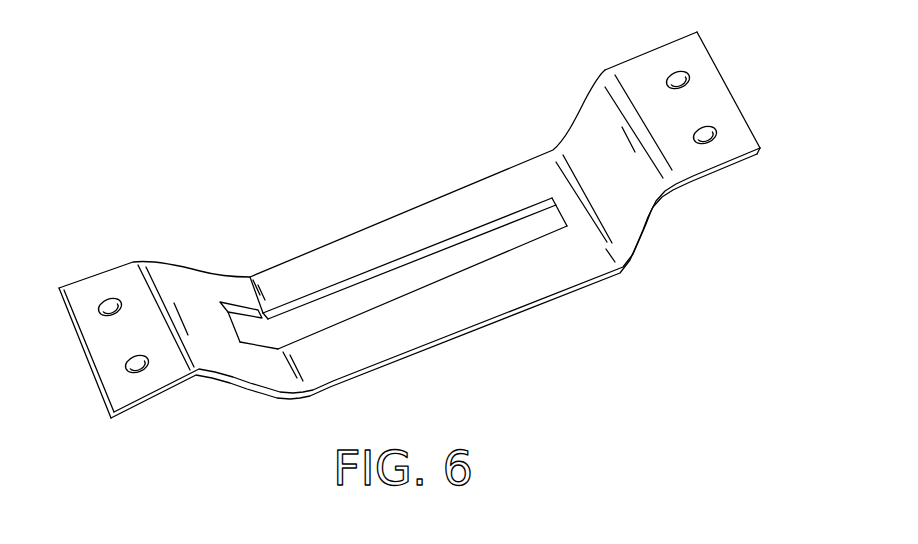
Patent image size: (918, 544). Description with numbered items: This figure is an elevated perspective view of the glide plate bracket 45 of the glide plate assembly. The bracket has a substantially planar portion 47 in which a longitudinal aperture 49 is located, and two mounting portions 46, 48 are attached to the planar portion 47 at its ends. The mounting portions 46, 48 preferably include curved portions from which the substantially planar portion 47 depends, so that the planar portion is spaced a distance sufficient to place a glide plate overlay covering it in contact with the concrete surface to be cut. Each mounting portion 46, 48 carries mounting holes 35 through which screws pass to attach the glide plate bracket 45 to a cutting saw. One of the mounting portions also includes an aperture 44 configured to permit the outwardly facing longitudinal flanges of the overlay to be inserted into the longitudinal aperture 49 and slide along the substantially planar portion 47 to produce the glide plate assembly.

The mounting holes 35 is at (97, 310).
The aperture 44 is at (229, 322).
The glide plate bracket 45 is at (511, 106).
The mounting portion 46 is at (115, 270).
The substantially planar portion 47 is at (378, 233).
The mounting portion 48 is at (605, 67).
The longitudinal aperture 49 is at (428, 281).